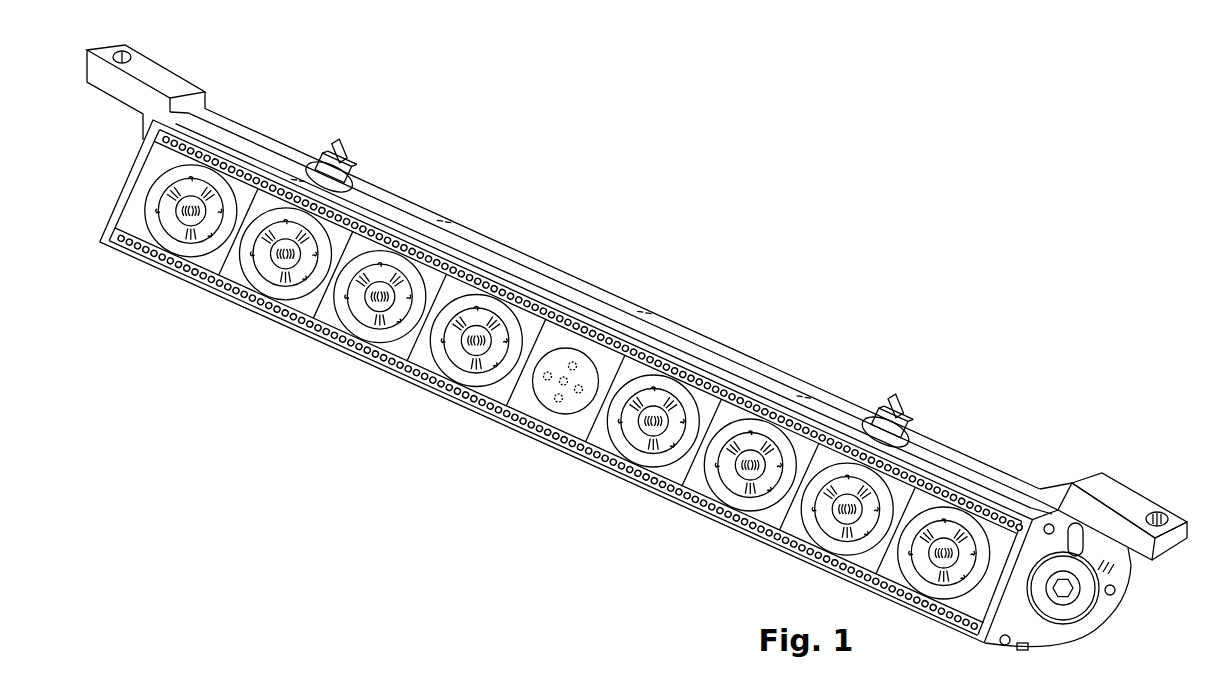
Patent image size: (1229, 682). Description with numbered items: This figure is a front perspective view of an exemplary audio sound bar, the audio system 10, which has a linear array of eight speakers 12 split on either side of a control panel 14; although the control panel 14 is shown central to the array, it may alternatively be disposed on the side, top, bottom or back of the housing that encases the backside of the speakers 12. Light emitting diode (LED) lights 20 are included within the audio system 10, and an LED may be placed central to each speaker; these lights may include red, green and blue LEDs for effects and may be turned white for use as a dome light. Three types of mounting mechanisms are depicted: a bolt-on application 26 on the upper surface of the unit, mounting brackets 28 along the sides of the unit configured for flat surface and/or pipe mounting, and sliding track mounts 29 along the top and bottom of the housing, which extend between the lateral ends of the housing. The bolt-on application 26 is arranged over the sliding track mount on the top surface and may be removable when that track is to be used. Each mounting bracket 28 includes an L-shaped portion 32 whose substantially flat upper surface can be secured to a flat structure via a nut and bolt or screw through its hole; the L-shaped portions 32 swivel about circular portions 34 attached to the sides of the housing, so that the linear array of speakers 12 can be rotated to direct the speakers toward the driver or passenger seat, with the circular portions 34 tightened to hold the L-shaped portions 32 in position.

The audio system 10 is at (705, 211).
The speakers 12 is at (929, 554).
The control panel 14 is at (583, 368).
The light emitting diode (LED) lights 20 is at (960, 497).
The bolt-on application 26 is at (345, 163).
The mounting brackets 28 is at (190, 61).
The sliding track mounts 29 is at (767, 378).
The L-shaped portions 32 is at (1130, 507).
The circular portions 34 is at (1090, 583).